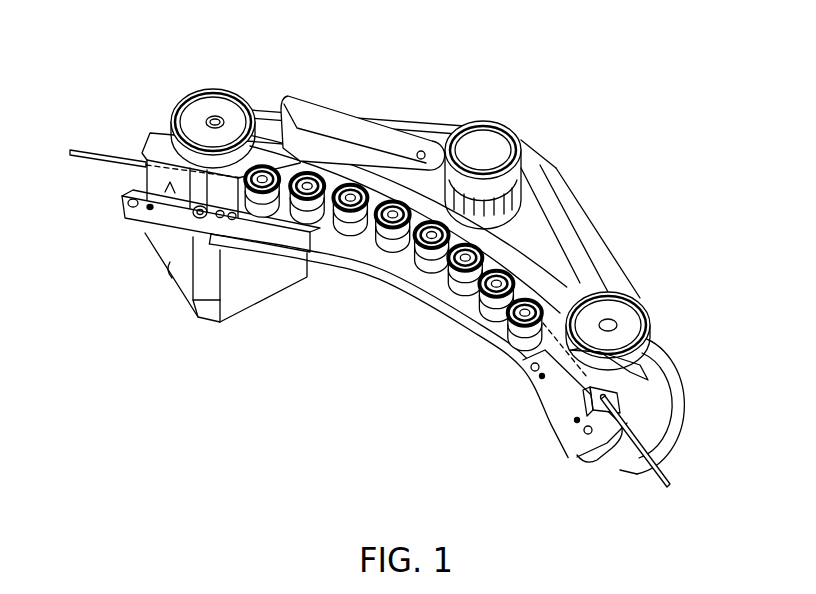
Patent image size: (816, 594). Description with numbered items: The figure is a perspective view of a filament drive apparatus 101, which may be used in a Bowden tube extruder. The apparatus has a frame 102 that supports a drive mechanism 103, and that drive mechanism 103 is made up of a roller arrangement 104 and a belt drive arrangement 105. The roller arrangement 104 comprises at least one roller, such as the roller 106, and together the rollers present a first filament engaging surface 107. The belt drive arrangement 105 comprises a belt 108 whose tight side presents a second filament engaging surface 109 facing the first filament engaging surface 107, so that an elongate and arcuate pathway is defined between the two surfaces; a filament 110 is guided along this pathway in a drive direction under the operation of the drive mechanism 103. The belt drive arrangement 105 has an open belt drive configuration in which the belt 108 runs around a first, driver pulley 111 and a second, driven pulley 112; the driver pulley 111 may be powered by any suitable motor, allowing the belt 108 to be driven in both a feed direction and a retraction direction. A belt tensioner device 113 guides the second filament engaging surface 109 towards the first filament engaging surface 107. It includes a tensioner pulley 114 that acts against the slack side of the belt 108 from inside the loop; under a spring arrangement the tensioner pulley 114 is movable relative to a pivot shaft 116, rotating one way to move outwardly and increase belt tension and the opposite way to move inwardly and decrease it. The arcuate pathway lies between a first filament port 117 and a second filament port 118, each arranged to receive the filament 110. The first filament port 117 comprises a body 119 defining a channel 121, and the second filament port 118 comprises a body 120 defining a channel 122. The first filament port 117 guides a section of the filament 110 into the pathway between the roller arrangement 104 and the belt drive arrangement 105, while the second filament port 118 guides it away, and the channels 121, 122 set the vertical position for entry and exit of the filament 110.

The filament drive apparatus 101 is at (243, 403).
The frame 102 is at (660, 420).
The drive mechanism 103 is at (570, 125).
The roller arrangement 104 is at (425, 290).
The belt drive arrangement 105 is at (625, 262).
The roller 106 is at (518, 330).
The first filament engaging surface 107 is at (532, 277).
The belt 108 is at (615, 293).
The second filament engaging surface 109 is at (465, 393).
The filament 110 is at (668, 483).
The first, driver pulley 111 is at (205, 108).
The second, driven pulley 112 is at (630, 323).
The belt tensioner device 113 is at (480, 100).
The tensioner pulley 114 is at (510, 140).
The pivot shaft 116 is at (395, 215).
The first filament port 117 is at (572, 380).
The second filament port 118 is at (148, 233).
The body 119 is at (660, 358).
The body 120 is at (155, 148).
The channel 121 is at (640, 384).
The channel 122 is at (145, 172).